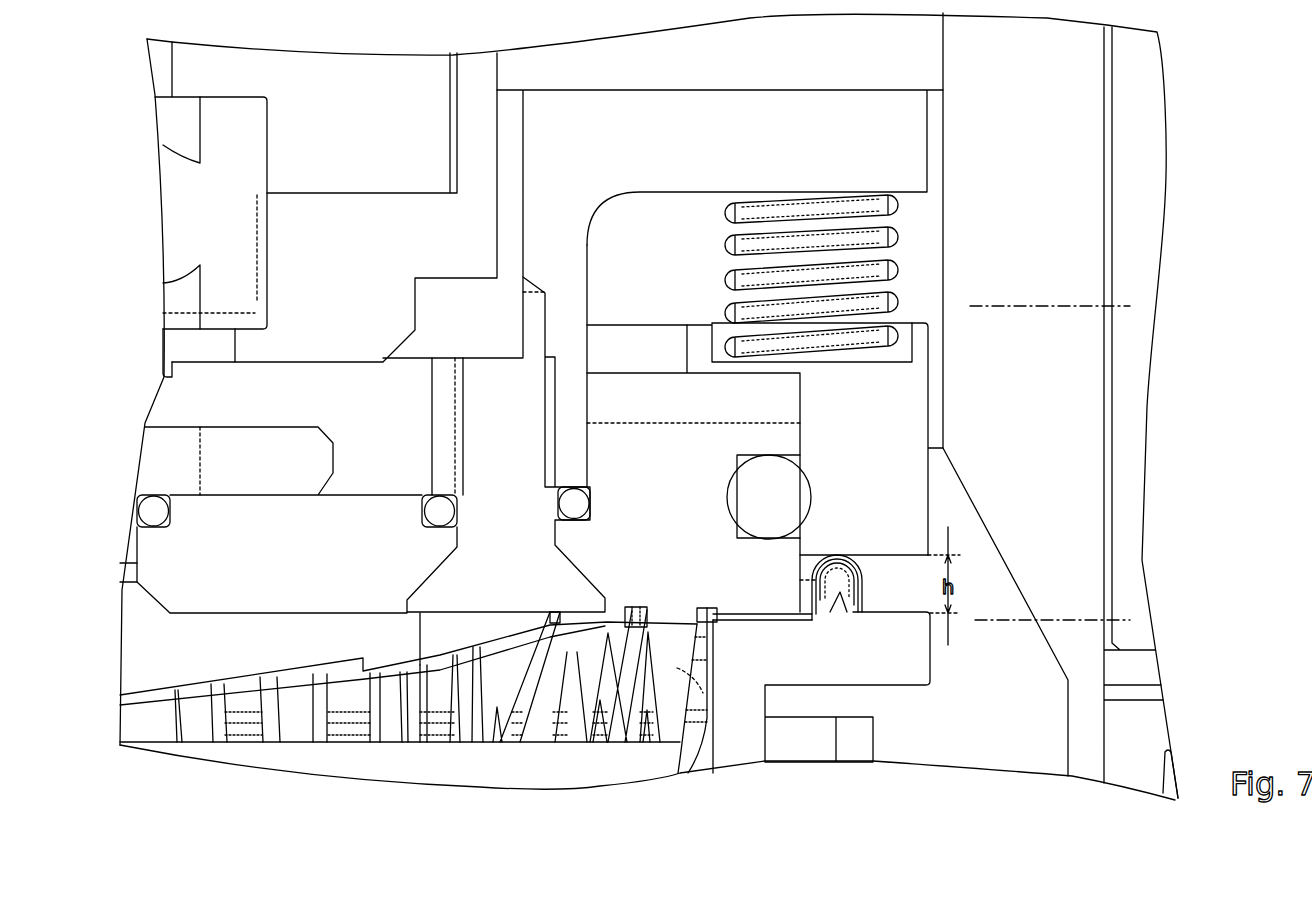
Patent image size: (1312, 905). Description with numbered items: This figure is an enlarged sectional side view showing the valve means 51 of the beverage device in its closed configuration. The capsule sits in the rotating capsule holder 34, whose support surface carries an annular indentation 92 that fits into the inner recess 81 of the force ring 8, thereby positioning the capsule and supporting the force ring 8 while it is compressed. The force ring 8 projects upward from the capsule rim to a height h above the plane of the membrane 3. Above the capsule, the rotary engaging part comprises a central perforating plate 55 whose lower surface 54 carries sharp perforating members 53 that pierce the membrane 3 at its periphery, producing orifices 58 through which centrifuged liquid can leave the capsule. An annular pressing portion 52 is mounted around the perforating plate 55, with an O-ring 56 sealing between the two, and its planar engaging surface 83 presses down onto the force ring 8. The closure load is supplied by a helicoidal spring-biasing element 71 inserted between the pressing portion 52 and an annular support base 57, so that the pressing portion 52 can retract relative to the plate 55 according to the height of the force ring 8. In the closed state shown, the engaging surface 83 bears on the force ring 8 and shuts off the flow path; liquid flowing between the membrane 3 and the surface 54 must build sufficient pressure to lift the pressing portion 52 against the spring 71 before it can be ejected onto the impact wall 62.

The membrane 3 is at (427, 677).
The force ring 8 is at (865, 572).
The capsule holder 34 is at (930, 651).
The valve means 51 is at (1160, 306).
The annular pressing portion 52 is at (897, 417).
The perforating members 53 is at (715, 693).
The lower surface of the perforating plate 54 is at (762, 612).
The perforating plate 55 is at (693, 445).
The O-ring 56 is at (786, 498).
The annular support base 57 is at (905, 126).
The orifices 58 is at (713, 632).
The impact wall 62 is at (1045, 640).
The spring-biasing element 71 is at (902, 238).
The inner recess of the force ring 81 is at (815, 580).
The engaging surface 83 is at (890, 555).
The annular indentation 92 is at (862, 590).